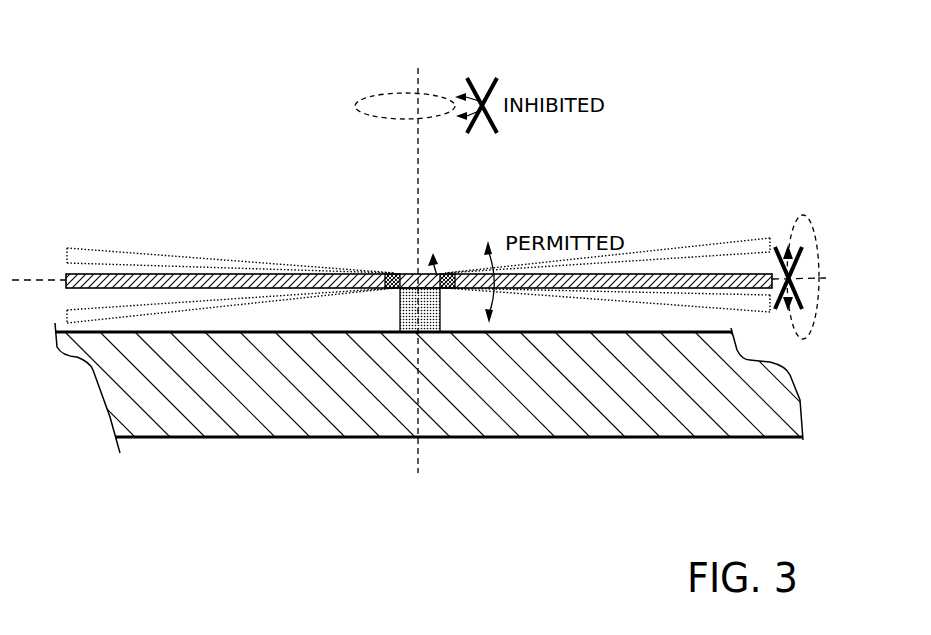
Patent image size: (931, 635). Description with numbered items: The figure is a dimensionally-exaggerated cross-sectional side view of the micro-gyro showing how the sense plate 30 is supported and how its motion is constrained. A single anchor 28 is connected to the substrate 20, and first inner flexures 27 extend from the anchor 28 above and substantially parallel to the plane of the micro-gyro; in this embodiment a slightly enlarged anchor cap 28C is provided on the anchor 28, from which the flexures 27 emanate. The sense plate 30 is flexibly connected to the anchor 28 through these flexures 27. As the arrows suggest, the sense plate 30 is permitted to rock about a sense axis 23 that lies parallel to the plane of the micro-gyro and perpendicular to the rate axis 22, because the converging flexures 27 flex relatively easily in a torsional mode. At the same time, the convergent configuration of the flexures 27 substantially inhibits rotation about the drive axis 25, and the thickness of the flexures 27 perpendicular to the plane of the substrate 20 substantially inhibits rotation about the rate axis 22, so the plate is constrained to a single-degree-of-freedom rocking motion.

The substrate 20 is at (713, 430).
The rate axis 22 is at (443, 262).
The sense axis 23 is at (420, 282).
The drive axis 25 is at (433, 241).
The first inner flexures 27 is at (441, 280).
The anchor 28 is at (400, 315).
The anchor cap 28C is at (405, 297).
The sense plate 30 is at (665, 273).